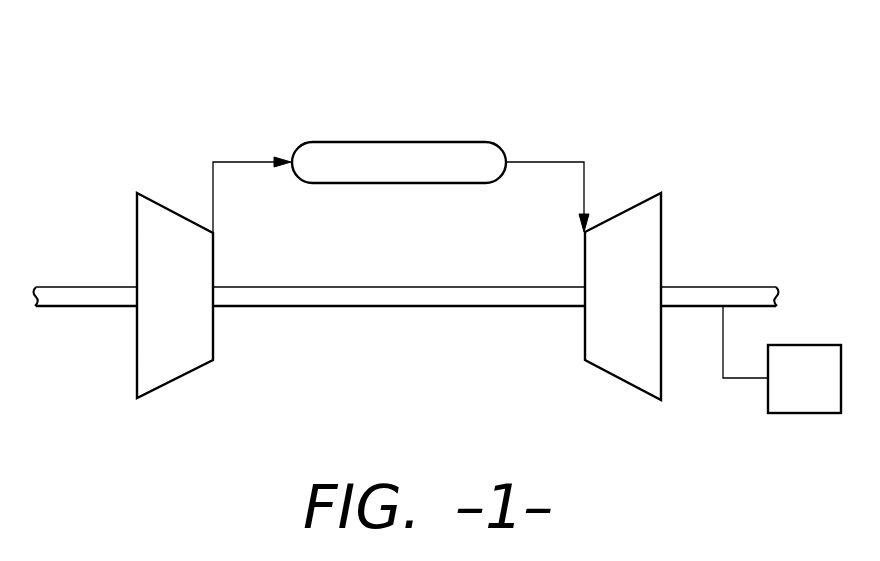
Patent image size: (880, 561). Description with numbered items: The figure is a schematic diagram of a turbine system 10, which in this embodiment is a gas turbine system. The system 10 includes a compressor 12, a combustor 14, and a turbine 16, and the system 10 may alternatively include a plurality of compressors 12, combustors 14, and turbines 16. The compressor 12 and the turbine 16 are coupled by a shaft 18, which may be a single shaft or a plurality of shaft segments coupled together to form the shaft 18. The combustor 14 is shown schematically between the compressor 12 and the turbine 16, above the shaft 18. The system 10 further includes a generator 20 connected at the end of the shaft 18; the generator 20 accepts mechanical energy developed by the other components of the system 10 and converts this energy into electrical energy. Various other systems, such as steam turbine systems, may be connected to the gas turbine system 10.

The turbine system 10 is at (205, 104).
The compressor 12 is at (137, 214).
The combustor 14 is at (440, 142).
The turbine 16 is at (661, 216).
The shaft 18 is at (352, 306).
The generator 20 is at (782, 359).